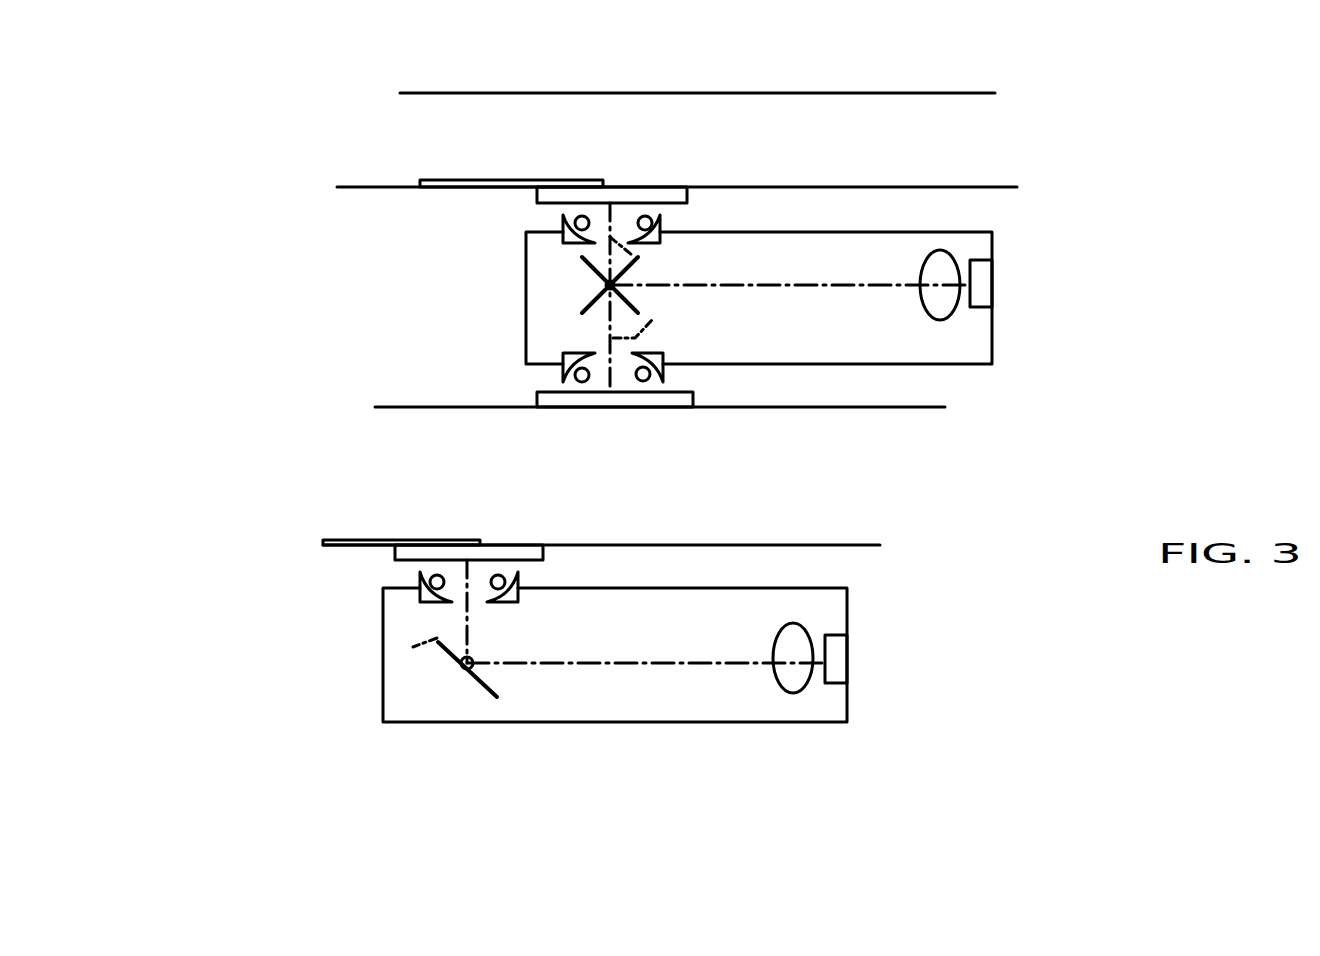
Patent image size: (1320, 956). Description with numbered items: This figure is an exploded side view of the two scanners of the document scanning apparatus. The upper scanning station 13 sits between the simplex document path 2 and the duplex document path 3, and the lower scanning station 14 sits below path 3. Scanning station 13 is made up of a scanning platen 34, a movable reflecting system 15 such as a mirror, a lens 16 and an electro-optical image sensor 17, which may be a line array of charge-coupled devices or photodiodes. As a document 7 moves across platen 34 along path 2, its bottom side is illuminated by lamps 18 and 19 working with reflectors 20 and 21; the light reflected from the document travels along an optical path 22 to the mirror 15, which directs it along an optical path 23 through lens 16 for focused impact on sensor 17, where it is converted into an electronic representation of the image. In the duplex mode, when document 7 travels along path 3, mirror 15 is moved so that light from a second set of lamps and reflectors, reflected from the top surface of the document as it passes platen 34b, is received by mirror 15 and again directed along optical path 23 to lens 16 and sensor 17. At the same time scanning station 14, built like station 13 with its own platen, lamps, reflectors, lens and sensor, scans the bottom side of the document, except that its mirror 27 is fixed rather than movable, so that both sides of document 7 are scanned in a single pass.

The path 2 is at (963, 128).
The document path 3 is at (840, 515).
The document 7 is at (437, 180).
The scanning station 13 is at (1112, 231).
The scanning station 14 is at (222, 742).
The reflecting system 15 is at (600, 287).
The lens 16 is at (935, 253).
The electro-optical image sensor 17 is at (983, 280).
The lamp 18 is at (580, 216).
The lamp 19 is at (645, 216).
The reflector 20 is at (563, 243).
The reflector 21 is at (662, 243).
The optical path 22 is at (632, 255).
The optical path 23 is at (843, 288).
The mirror 27 is at (433, 680).
The scanning platen 34 is at (672, 192).
The platen 34b is at (648, 408).